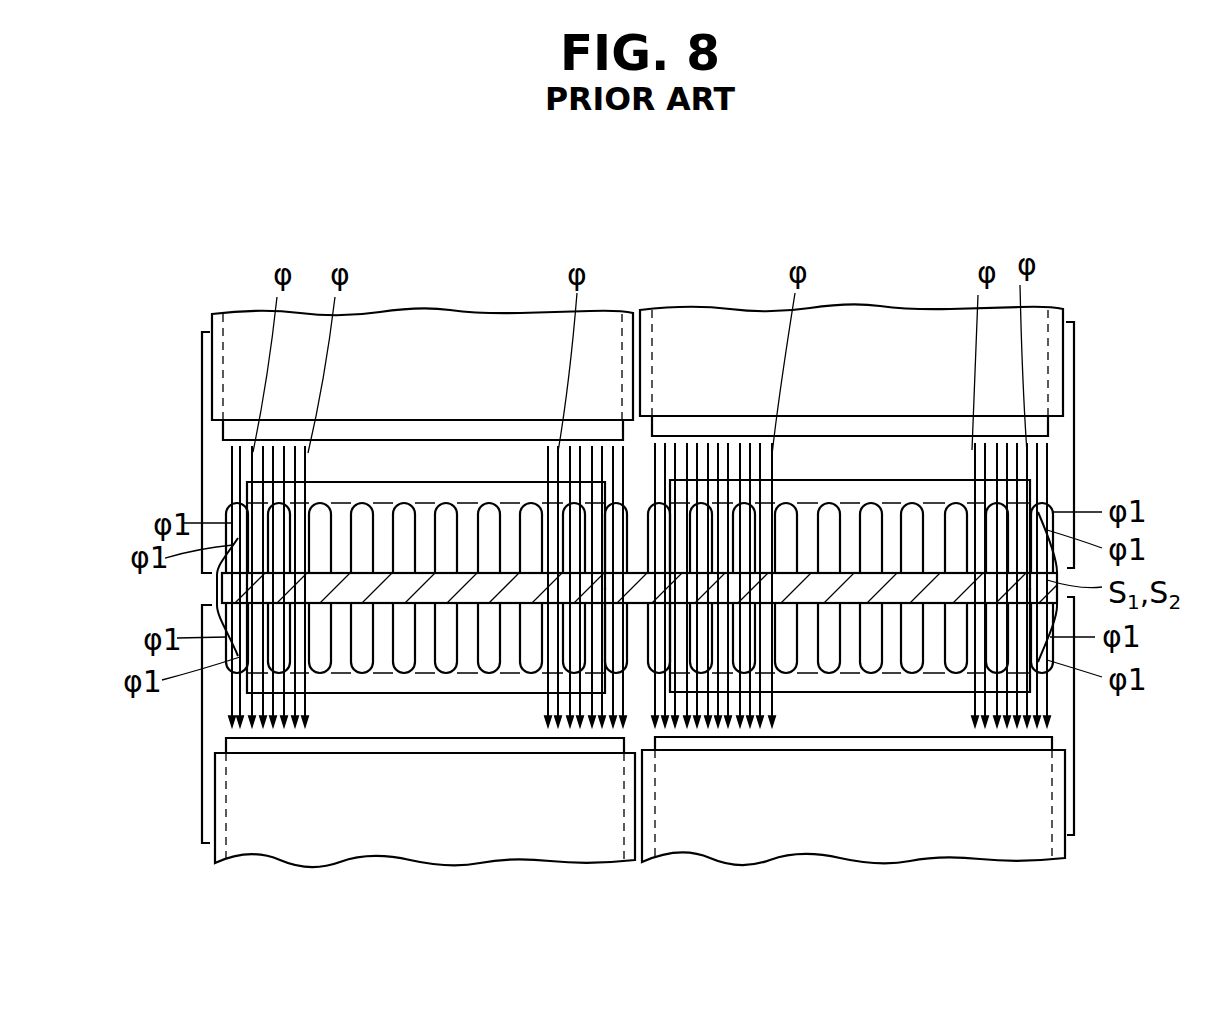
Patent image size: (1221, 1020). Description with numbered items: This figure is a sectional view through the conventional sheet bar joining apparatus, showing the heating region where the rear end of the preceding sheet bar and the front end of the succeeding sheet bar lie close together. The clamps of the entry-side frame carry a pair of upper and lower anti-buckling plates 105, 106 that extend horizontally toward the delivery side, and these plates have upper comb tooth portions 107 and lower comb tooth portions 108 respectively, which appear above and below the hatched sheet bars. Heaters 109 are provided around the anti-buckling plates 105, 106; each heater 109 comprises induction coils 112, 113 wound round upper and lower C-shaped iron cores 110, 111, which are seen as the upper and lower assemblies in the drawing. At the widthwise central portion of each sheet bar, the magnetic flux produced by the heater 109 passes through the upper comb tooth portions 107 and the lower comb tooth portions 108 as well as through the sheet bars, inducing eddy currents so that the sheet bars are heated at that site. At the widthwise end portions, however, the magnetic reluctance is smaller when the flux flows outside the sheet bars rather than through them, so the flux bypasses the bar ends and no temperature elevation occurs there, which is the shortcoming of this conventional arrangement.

The upper anti-buckling plate 105 is at (455, 480).
The lower anti-buckling plate 106 is at (425, 694).
The upper comb tooth portions 107 is at (277, 562).
The lower comb tooth portions 108 is at (278, 663).
The heater 109 is at (403, 308).
The upper C-shaped iron core 110 is at (237, 430).
The lower C-shaped iron core 111 is at (225, 748).
The induction coil 112 is at (202, 370).
The induction coil 113 is at (218, 810).